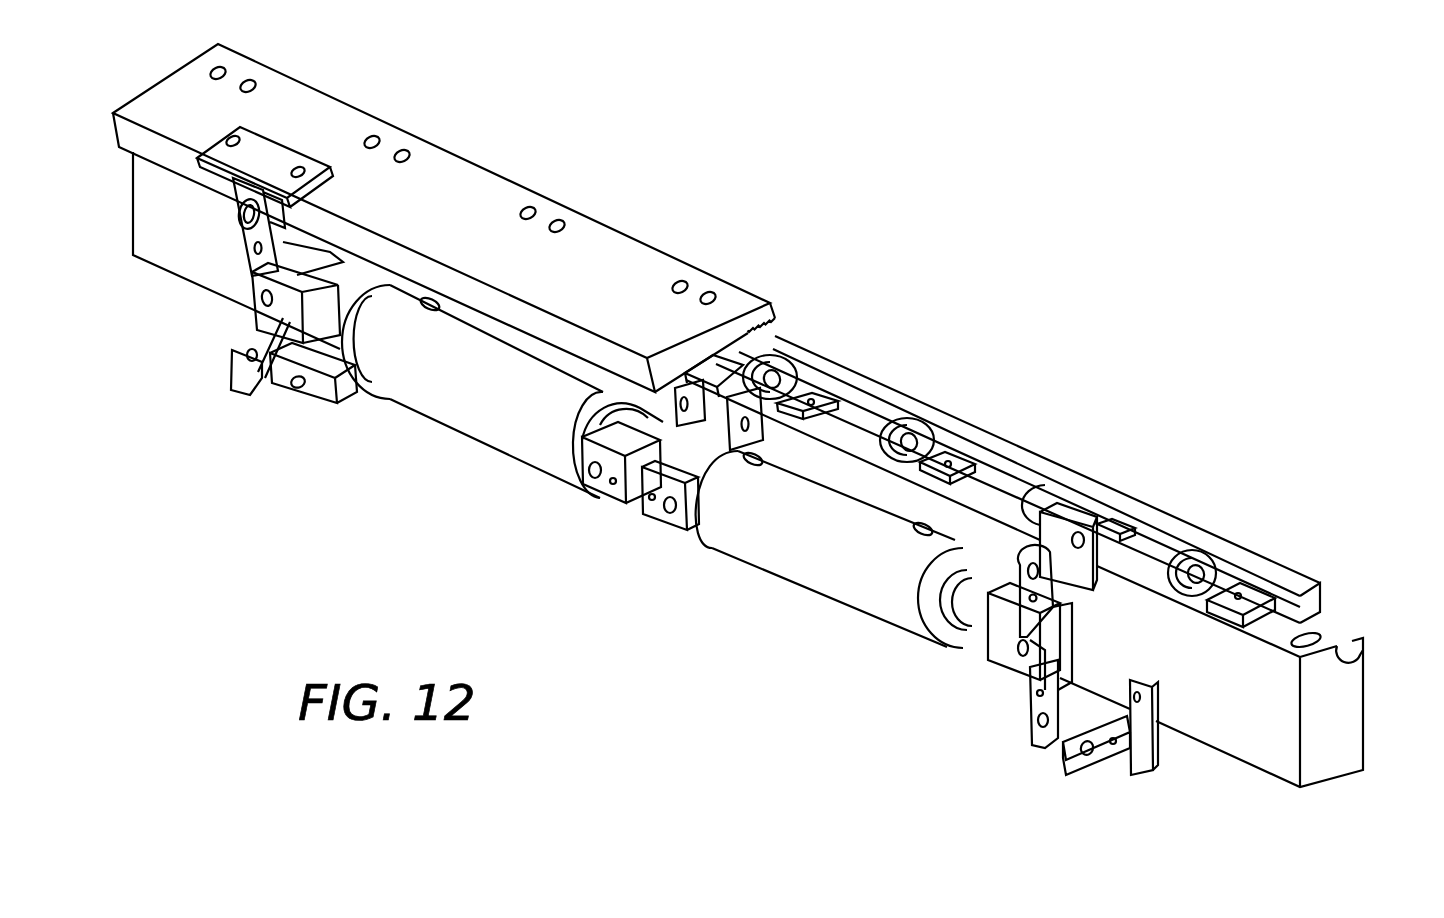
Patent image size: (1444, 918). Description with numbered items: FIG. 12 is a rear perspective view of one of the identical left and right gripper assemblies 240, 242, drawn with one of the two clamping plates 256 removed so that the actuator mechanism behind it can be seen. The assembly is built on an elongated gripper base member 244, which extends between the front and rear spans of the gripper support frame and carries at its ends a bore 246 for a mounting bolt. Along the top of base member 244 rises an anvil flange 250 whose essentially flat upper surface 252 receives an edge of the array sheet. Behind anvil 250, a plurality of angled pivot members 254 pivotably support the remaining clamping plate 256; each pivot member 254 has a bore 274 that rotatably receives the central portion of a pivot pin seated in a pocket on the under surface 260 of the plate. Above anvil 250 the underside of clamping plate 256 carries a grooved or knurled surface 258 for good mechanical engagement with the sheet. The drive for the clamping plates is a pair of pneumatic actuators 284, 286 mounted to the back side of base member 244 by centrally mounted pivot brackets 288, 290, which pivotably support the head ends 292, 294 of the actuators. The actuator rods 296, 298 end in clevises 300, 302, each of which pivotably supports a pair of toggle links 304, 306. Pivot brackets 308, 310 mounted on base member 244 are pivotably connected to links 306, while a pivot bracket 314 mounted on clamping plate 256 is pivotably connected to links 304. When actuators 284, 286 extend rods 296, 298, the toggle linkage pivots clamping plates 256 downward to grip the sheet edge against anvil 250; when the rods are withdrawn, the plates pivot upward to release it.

The left gripper assembly 240 is at (1062, 467).
The right gripper assembly 242 is at (1062, 467).
The gripper base member 244 is at (1240, 745).
The bore 246 is at (1366, 677).
The anvil flange 250 is at (1318, 603).
The upper surface 252 is at (1197, 528).
The angled pivot member 254 is at (795, 400).
The clamping plate 256 is at (500, 181).
The grooved or knurled surface 258 is at (780, 316).
The under surface 260 is at (770, 345).
The bore 274 is at (800, 372).
The pneumatic actuator 284 is at (790, 567).
The pneumatic actuator 286 is at (458, 430).
The pivot bracket 288 is at (662, 513).
The pivot bracket 290 is at (603, 497).
The head end 292 is at (700, 465).
The head end 294 is at (600, 425).
The rod 296 is at (960, 637).
The rod 298 is at (372, 305).
The clevis 300 is at (1007, 677).
The clevis 302 is at (258, 332).
The toggle link 304 is at (247, 236).
The toggle link 306 is at (255, 326).
The pivot bracket 308 is at (1143, 748).
The pivot bracket 310 is at (356, 388).
The pivot bracket 314 is at (263, 150).